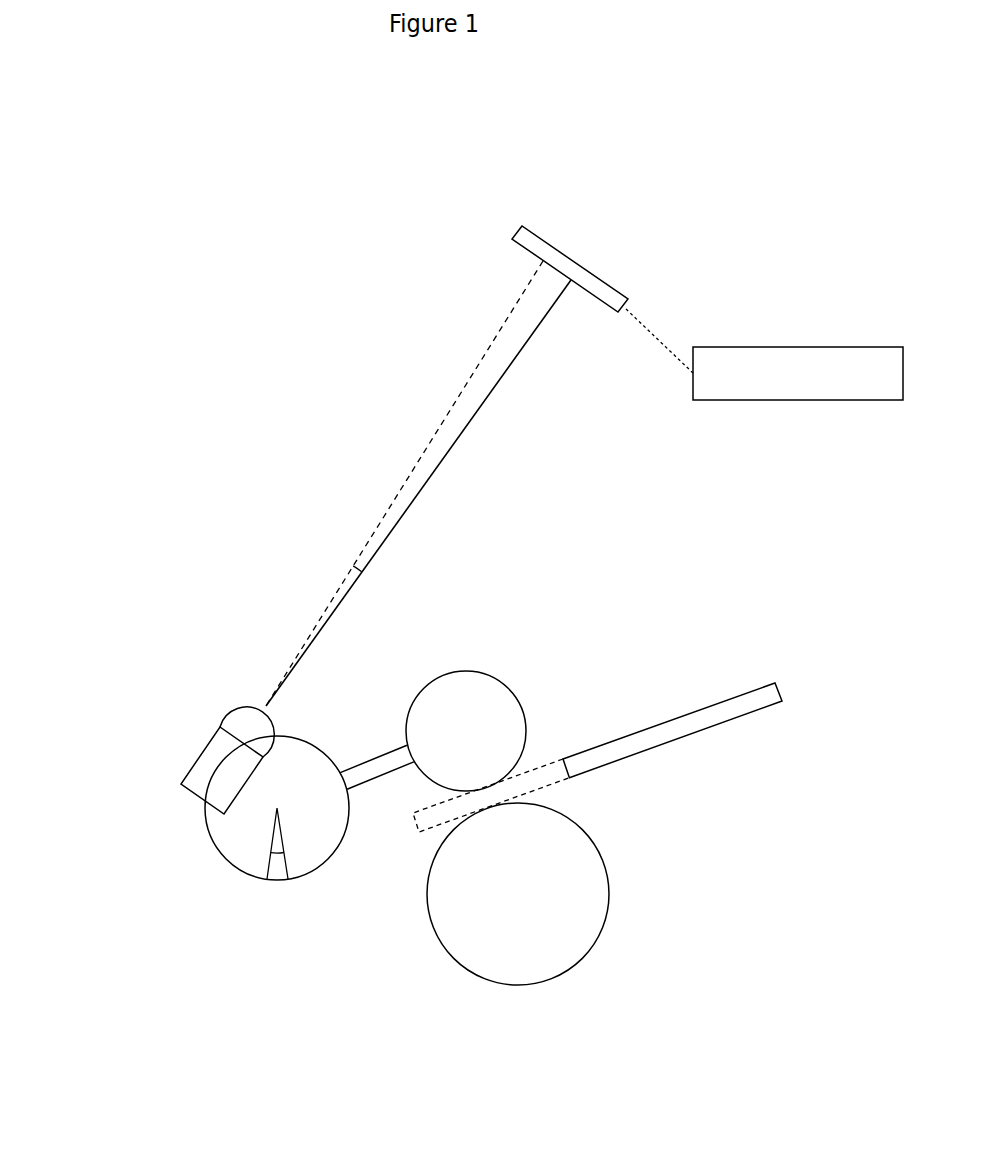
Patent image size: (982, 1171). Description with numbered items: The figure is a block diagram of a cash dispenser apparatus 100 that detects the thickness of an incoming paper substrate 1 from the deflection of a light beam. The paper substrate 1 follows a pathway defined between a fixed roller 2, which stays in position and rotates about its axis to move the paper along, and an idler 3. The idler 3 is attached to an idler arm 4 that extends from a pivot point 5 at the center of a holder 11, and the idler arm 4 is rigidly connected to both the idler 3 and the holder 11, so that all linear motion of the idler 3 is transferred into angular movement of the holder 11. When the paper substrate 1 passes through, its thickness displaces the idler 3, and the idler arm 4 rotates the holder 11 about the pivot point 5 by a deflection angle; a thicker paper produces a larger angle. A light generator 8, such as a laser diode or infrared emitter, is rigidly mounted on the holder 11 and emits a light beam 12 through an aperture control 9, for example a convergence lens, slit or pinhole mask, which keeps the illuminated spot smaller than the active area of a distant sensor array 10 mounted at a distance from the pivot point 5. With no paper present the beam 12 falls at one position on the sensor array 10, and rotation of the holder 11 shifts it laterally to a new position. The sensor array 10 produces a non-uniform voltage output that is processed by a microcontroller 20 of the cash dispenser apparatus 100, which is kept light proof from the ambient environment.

The paper substrate 1 is at (731, 698).
The fixed roller 2 is at (597, 922).
The idler 3 is at (480, 680).
The idler arm 4 is at (358, 758).
The pivot point 5 is at (277, 808).
The light generator 8 is at (200, 753).
The aperture control 9 is at (230, 720).
The sensor array 10 is at (606, 283).
The holder 11 is at (308, 875).
The light beam 12 is at (467, 428).
The microcontroller 20 is at (801, 348).
The cash dispenser apparatus 100 is at (254, 366).